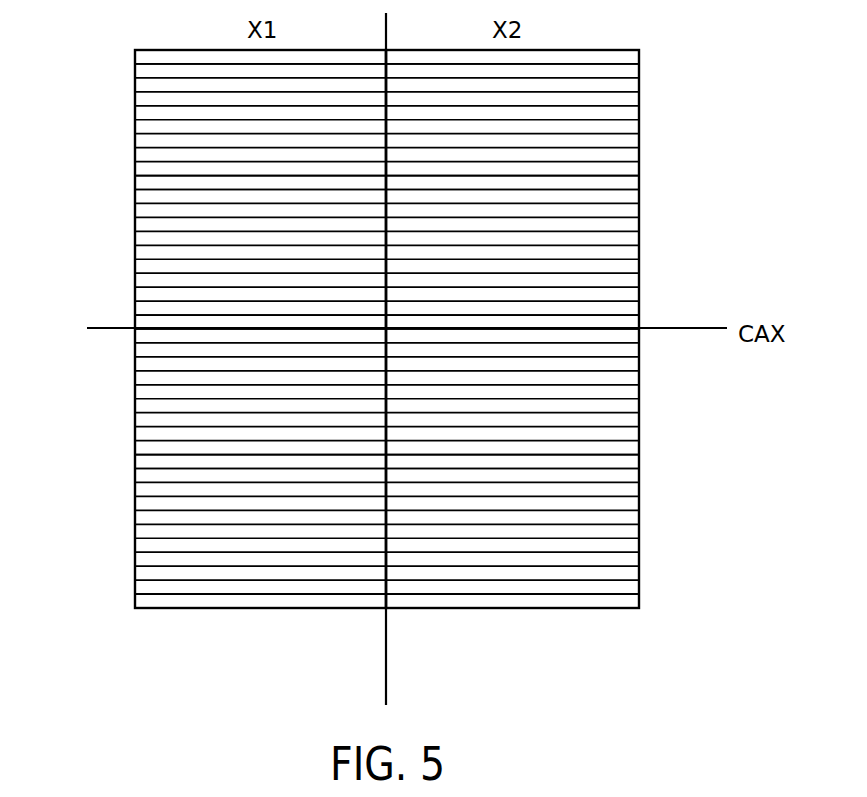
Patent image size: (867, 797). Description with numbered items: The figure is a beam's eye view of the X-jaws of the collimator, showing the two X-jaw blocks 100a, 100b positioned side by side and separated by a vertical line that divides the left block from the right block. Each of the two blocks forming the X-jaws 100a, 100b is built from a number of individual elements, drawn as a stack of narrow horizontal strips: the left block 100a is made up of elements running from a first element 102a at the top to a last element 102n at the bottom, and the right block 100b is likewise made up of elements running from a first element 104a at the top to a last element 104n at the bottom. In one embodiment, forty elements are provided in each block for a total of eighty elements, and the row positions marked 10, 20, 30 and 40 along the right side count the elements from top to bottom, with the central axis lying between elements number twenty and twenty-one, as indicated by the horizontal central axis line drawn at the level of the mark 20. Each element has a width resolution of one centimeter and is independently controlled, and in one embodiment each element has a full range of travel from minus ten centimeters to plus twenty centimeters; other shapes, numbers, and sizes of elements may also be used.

The leaf pair 10 is at (632, 185).
The leaf pair 20 is at (632, 323).
The leaf pair 30 is at (632, 464).
The leaf pair 40 is at (632, 603).
The X-jaw 100a is at (265, 608).
The X-jaw 100b is at (513, 610).
The individual element 102a is at (147, 57).
The individual element 102n is at (142, 598).
The individual element 104a is at (628, 60).
The individual element 104n is at (618, 603).